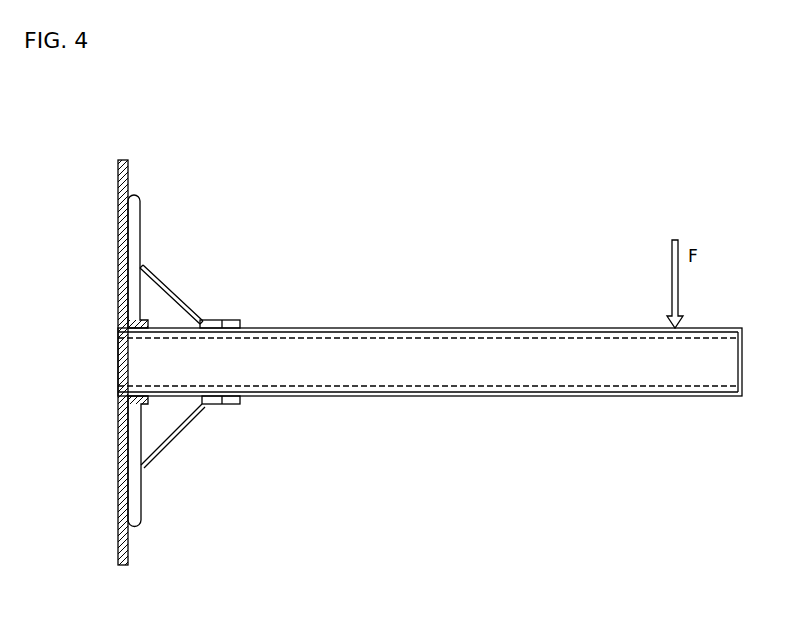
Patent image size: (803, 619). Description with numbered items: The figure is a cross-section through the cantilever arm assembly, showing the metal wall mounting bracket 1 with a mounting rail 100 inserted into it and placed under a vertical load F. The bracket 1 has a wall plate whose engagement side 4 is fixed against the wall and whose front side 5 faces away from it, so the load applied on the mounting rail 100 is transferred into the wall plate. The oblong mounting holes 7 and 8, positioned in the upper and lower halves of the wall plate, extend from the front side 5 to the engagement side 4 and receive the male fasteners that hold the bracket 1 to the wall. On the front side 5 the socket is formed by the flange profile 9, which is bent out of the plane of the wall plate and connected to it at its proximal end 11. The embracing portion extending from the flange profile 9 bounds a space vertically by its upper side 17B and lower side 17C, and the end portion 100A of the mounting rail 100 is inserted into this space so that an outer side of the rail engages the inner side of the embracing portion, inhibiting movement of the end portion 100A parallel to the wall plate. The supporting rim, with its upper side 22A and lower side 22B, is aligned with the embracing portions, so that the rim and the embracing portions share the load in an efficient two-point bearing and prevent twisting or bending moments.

The mounting hole 7 is at (120, 243).
The metal wall mounting bracket 1 is at (120, 295).
The proximal end 11 is at (141, 262).
The flange profile 9 is at (197, 320).
The upper side 17B is at (222, 320).
The mounting rail 100 is at (493, 328).
The end portion 100A is at (200, 360).
The upper side 22A is at (128, 332).
The lower side 22B is at (130, 384).
The engagement side 4 is at (118, 428).
The mounting hole 8 is at (120, 490).
The front side 5 is at (133, 452).
The lower side 17C is at (222, 404).